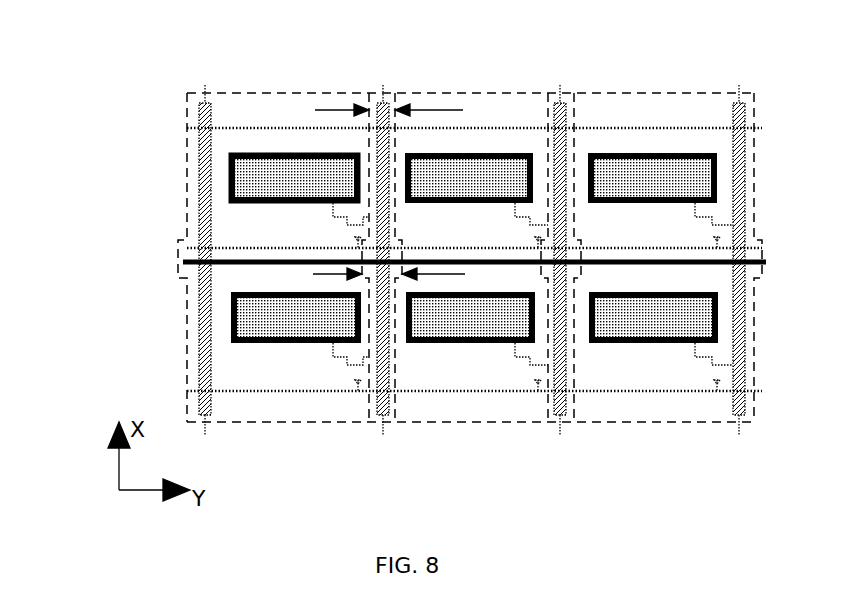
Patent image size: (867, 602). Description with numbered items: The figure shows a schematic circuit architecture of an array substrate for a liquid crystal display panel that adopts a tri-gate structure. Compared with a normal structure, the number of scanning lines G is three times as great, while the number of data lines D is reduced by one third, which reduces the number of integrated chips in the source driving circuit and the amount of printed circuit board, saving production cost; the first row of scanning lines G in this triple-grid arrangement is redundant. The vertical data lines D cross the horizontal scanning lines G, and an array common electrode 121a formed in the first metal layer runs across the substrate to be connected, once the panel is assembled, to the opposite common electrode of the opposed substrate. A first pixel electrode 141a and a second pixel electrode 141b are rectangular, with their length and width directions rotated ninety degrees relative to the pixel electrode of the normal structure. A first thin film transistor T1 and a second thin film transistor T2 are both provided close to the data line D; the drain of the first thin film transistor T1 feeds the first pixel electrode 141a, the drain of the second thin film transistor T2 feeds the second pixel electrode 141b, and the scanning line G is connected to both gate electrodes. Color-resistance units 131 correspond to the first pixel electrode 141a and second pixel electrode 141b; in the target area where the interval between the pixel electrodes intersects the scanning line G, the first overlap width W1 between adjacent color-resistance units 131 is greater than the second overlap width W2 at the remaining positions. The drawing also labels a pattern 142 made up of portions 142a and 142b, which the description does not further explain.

The array common electrode 121a is at (230, 190).
The color-resistance unit 131 is at (343, 402).
The first pixel electrode 141a is at (325, 168).
The second pixel electrode 141b is at (432, 177).
The light shielding pattern 142 is at (78, 290).
The first light shielding portion 142a is at (183, 265).
The second light shielding portion 142b is at (200, 313).
The first thin film transistor T1 is at (347, 222).
The second thin film transistor T2 is at (533, 218).
The first overlap width W1 is at (408, 278).
The second overlap width W2 is at (409, 114).
The data line D is at (470, 236).
The scanning line G is at (490, 260).